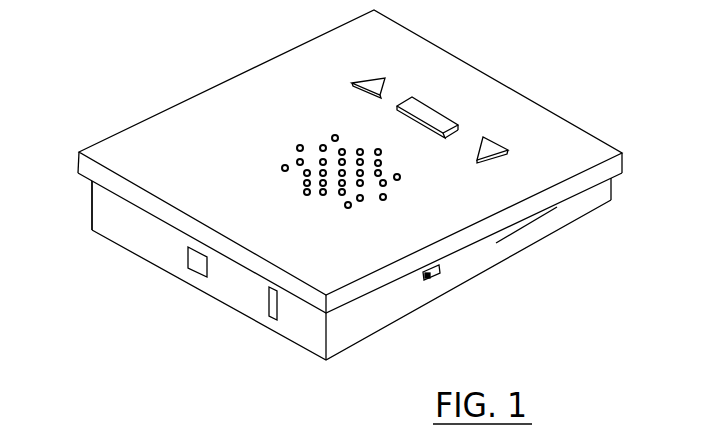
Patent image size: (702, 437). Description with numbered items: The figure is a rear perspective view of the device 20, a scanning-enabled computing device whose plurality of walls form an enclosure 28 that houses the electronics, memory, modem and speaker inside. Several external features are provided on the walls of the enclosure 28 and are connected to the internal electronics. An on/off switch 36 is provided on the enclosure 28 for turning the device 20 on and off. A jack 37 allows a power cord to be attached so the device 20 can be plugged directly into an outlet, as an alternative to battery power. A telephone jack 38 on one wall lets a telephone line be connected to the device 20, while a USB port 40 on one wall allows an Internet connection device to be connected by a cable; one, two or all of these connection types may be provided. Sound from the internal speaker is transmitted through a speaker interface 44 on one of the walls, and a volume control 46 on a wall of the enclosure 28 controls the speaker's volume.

The device 20 is at (409, 323).
The enclosure 28 is at (480, 258).
The on/off switch 36 is at (437, 267).
The jack 37 is at (118, 227).
The telephone jack 38 is at (185, 267).
The USB port 40 is at (269, 315).
The speaker interface 44 is at (323, 146).
The volume control 46 is at (509, 242).